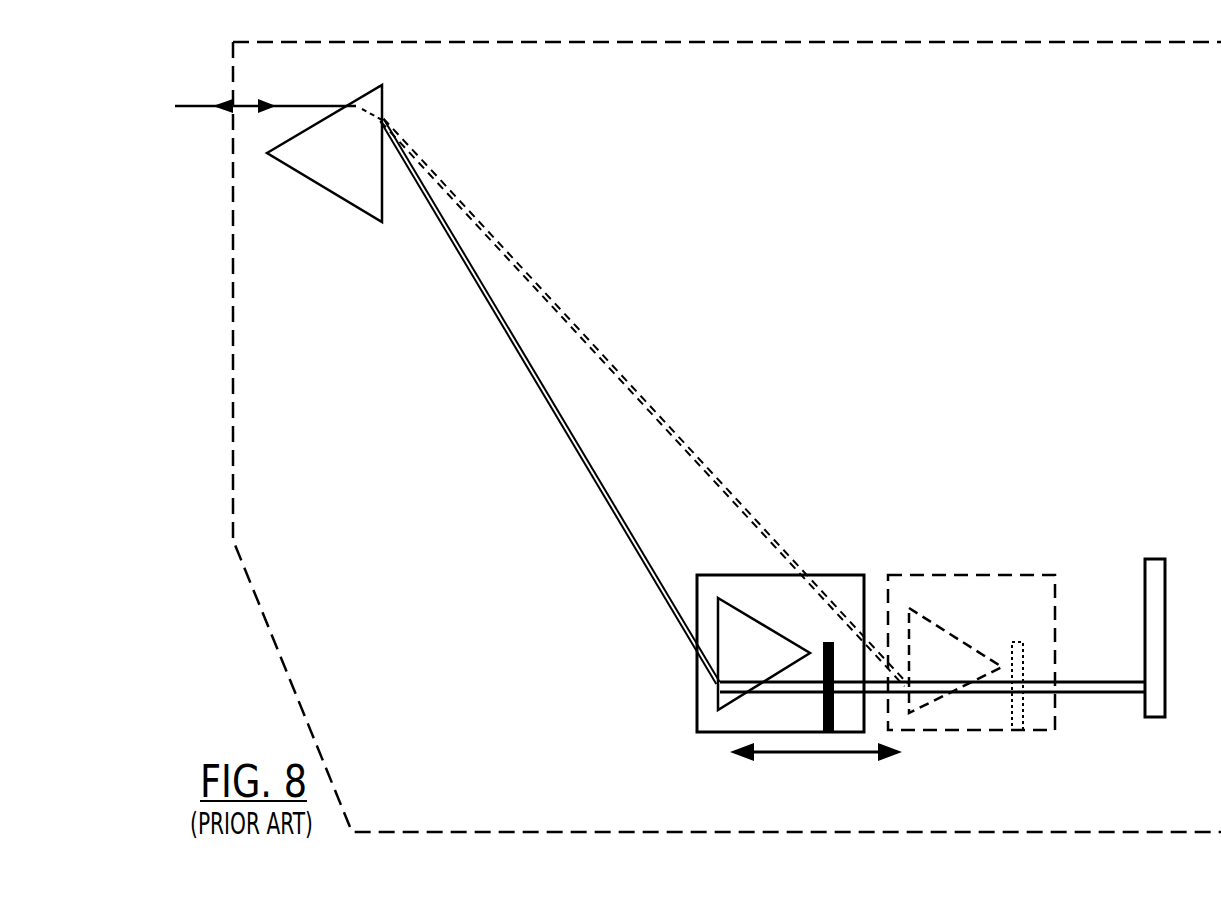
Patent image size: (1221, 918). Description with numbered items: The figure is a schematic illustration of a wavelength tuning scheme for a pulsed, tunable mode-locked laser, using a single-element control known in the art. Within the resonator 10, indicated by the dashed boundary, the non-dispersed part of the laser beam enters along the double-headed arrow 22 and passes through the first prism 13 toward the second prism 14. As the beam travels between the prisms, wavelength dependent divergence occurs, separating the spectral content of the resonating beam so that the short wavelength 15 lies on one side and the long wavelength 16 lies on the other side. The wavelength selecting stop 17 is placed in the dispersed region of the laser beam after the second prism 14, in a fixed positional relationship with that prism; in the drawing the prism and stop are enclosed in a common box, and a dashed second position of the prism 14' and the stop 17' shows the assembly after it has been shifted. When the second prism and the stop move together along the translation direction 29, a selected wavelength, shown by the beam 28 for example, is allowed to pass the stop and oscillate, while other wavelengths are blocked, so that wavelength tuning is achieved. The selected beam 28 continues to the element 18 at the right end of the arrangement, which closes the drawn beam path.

The resonator 10 is at (1003, 42).
The light beam input direction 22 is at (200, 109).
The first prism 13 is at (316, 194).
The short wavelength 15 is at (563, 438).
The long wavelength 16 is at (690, 438).
The second prism 14 is at (780, 634).
The wavelength selecting stop 17 is at (856, 634).
The beam 28 is at (1101, 678).
The second prism unit (shifted position) 14' is at (971, 633).
The aperture/mirror element (shifted position) 17' is at (1048, 633).
The detector/screen 18 is at (1160, 578).
The translation direction 29 is at (824, 757).